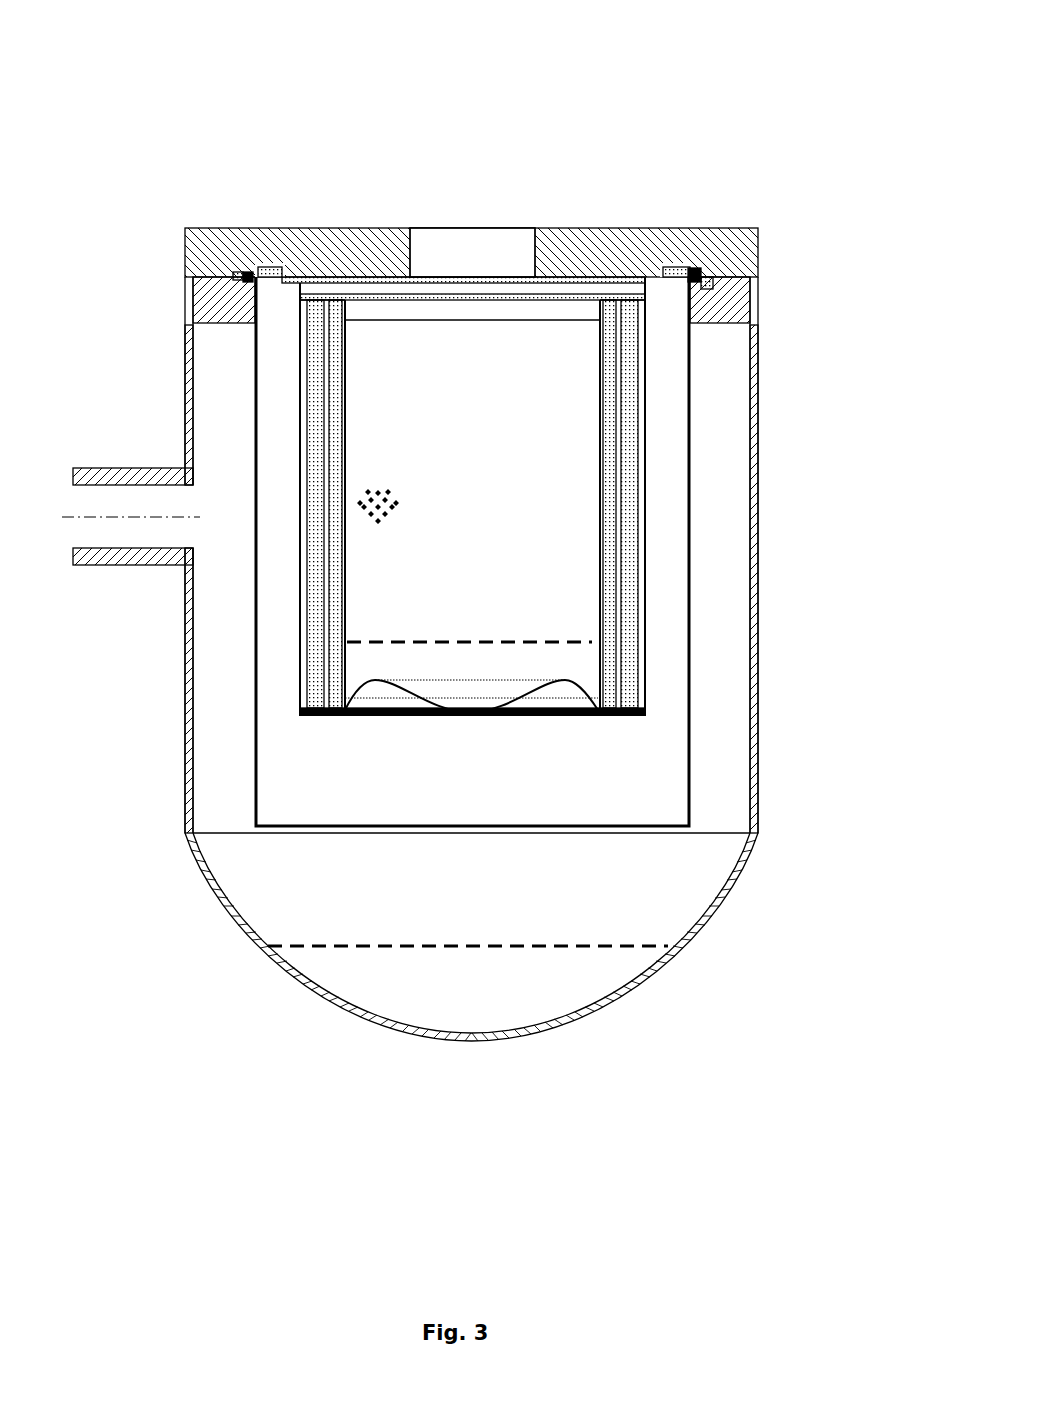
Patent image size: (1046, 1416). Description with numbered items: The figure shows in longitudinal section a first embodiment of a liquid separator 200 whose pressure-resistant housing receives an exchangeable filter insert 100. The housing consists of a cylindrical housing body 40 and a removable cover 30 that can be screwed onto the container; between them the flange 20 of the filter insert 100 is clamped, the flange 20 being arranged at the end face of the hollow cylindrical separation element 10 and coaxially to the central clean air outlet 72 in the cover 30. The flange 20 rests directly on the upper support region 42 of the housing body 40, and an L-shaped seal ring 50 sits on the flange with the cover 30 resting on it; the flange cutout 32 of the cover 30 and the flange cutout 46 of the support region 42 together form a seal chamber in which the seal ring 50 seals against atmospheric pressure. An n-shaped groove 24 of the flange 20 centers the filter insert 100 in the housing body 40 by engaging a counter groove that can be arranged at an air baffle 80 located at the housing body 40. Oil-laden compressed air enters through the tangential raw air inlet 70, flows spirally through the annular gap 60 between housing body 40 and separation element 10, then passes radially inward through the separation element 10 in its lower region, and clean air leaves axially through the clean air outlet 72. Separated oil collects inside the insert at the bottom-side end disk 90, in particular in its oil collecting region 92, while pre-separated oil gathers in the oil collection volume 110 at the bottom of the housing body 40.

The liquid separator 200 is at (808, 85).
The cover 30 is at (322, 238).
The flange cutout 32 is at (266, 264).
The groove 24 is at (720, 266).
The clean air outlet 72 is at (478, 264).
The upper support region 42 is at (238, 282).
The flange cutout 46 is at (226, 383).
The separation element 10 is at (343, 410).
The flange 20 is at (532, 312).
The seal ring 50 is at (714, 292).
The filter insert 100 is at (487, 442).
The air baffle 80 is at (250, 458).
The raw air inlet 70 is at (124, 536).
The annular gap 60 is at (227, 612).
The housing body 40 is at (758, 626).
The oil collecting region 92 is at (465, 672).
The bottom-side end disk 90 is at (575, 698).
The oil collection volume 110 is at (488, 992).